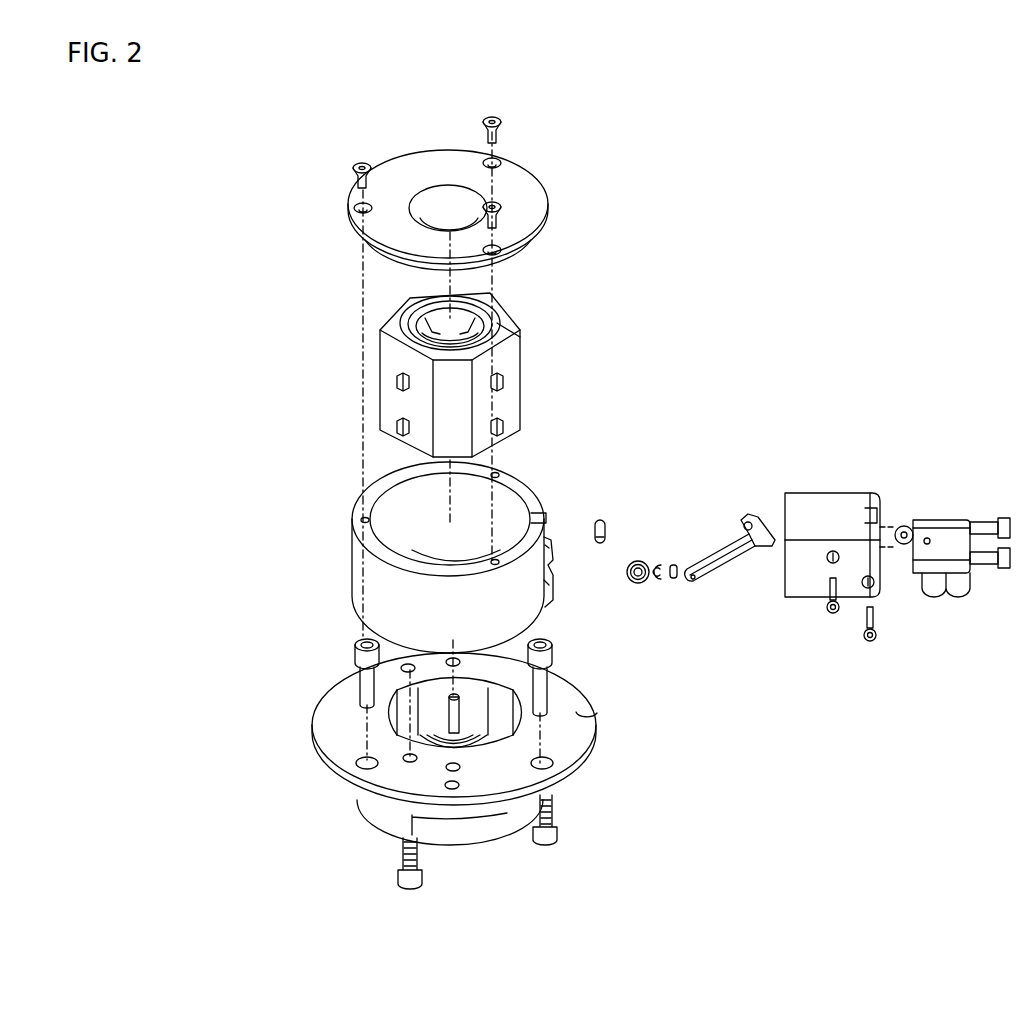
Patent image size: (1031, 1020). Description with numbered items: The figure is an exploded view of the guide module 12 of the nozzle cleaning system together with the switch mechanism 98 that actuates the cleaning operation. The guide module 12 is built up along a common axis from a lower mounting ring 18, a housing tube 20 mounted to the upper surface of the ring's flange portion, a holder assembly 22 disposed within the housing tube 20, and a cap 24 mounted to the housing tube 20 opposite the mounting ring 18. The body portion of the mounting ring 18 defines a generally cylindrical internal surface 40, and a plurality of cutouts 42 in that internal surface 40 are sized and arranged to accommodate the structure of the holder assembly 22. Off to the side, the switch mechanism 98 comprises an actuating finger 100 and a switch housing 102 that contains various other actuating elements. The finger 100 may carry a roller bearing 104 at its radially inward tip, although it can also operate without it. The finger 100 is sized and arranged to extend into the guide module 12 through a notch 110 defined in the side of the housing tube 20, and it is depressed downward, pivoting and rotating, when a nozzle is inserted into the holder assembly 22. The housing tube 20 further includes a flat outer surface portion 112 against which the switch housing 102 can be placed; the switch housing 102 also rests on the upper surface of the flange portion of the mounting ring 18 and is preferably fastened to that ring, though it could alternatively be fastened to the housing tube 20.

The guide module 12 is at (582, 180).
The cap 24 is at (543, 233).
The holder assembly 22 is at (392, 352).
The housing tube 20 is at (362, 530).
The mounting ring 18 is at (313, 710).
The internal surface 40 is at (392, 715).
The cutouts 42 is at (395, 740).
The notch 110 is at (547, 518).
The flat outer surface portion 112 is at (553, 570).
The roller bearing 104 is at (658, 545).
The actuating finger 100 is at (730, 573).
The switch housing 102 is at (868, 492).
The switch mechanism 98 is at (834, 478).